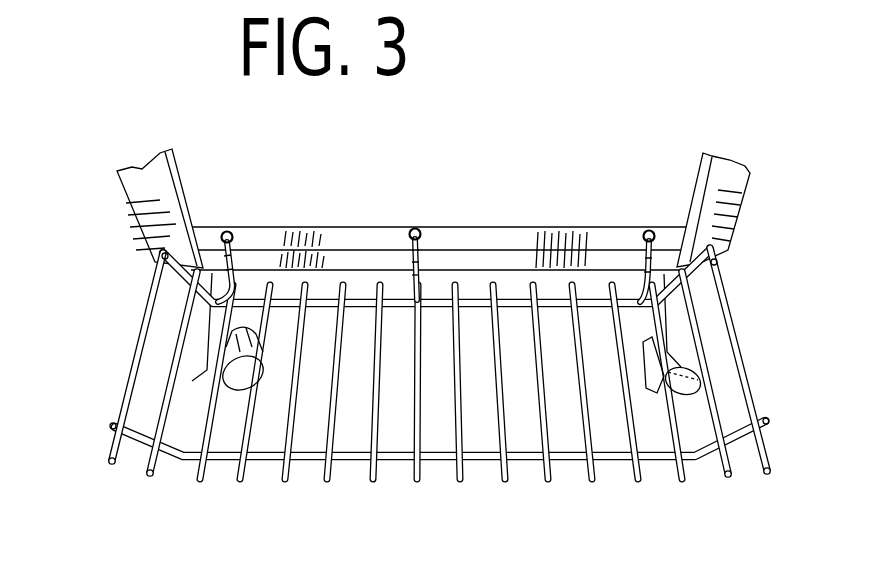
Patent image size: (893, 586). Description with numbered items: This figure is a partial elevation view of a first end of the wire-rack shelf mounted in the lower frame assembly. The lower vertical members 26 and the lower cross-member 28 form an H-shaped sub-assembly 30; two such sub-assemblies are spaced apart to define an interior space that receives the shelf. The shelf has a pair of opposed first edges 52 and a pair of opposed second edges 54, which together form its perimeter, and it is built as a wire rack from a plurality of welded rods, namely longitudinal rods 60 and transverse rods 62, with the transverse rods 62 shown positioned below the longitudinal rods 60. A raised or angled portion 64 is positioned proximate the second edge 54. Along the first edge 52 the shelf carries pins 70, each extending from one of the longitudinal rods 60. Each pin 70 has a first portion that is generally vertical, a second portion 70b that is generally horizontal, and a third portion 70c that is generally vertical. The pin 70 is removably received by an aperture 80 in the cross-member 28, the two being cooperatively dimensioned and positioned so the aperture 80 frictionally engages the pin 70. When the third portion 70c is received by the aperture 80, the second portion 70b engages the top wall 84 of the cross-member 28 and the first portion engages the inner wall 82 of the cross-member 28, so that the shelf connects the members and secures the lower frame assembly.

The lower vertical member 26 is at (173, 188).
The lower cross-member 28 is at (582, 233).
The H-shaped sub-assembly 30 is at (445, 336).
The first edge 52 is at (547, 290).
The second edge 54 is at (125, 360).
The longitudinal rod 60 is at (548, 478).
The transverse rod 62 is at (719, 264).
The raised portion 64 is at (130, 466).
The pin 70 is at (234, 258).
The second portion 70b is at (412, 231).
The third portion 70c is at (418, 229).
The aperture 80 is at (224, 233).
The inner wall 82 is at (266, 257).
The top wall 84 is at (322, 237).